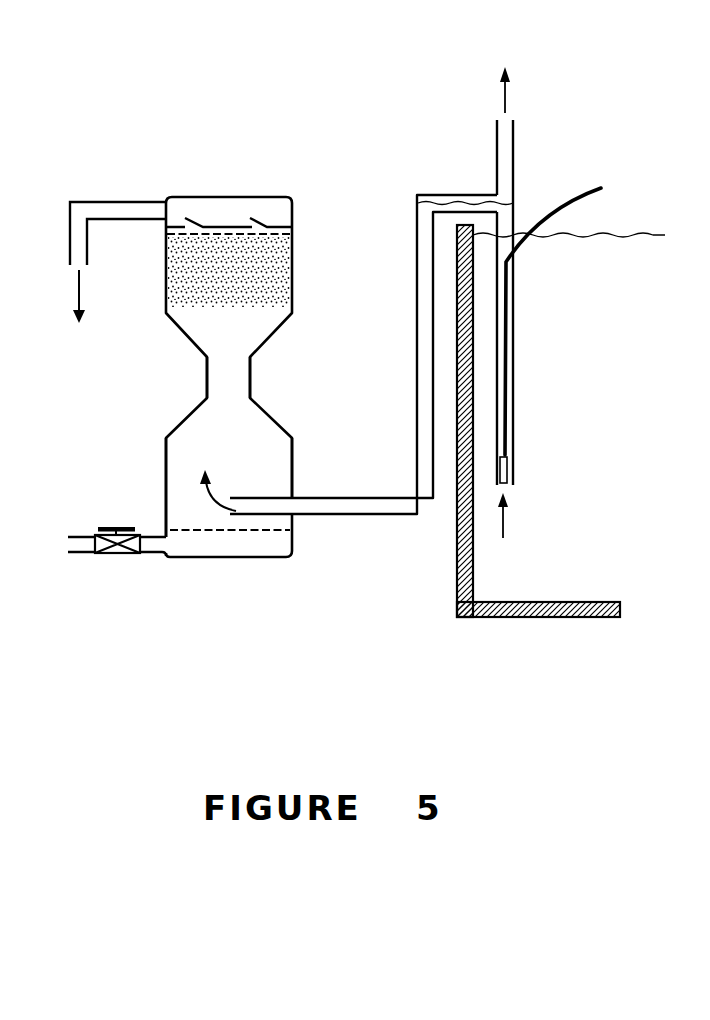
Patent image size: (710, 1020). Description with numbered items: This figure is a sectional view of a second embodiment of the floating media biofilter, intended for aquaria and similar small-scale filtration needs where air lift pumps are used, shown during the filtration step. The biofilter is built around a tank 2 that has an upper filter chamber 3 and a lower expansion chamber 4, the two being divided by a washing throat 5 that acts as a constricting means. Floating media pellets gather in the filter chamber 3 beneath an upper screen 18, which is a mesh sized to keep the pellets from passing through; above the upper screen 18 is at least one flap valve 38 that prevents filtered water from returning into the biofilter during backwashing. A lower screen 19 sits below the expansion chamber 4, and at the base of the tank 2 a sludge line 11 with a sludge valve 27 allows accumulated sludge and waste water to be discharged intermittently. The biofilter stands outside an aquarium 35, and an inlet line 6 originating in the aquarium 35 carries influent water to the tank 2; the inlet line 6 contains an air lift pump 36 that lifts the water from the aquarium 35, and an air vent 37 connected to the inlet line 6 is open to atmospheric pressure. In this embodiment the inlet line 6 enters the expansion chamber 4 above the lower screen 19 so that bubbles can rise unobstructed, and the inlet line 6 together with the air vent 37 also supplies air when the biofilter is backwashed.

The tank 2 is at (326, 211).
The filter chamber 3 is at (307, 287).
The expansion chamber 4 is at (307, 464).
The washing throat 5 is at (206, 368).
The inlet line 6 is at (345, 516).
The sludge line 11 is at (83, 537).
The upper screen 18 is at (270, 236).
The lower screen 19 is at (247, 533).
The sludge valve 27 is at (127, 556).
The aquarium 35 is at (480, 618).
The air lift pump 36 is at (508, 473).
The air vent 37 is at (514, 162).
The flap valve 38 is at (198, 224).